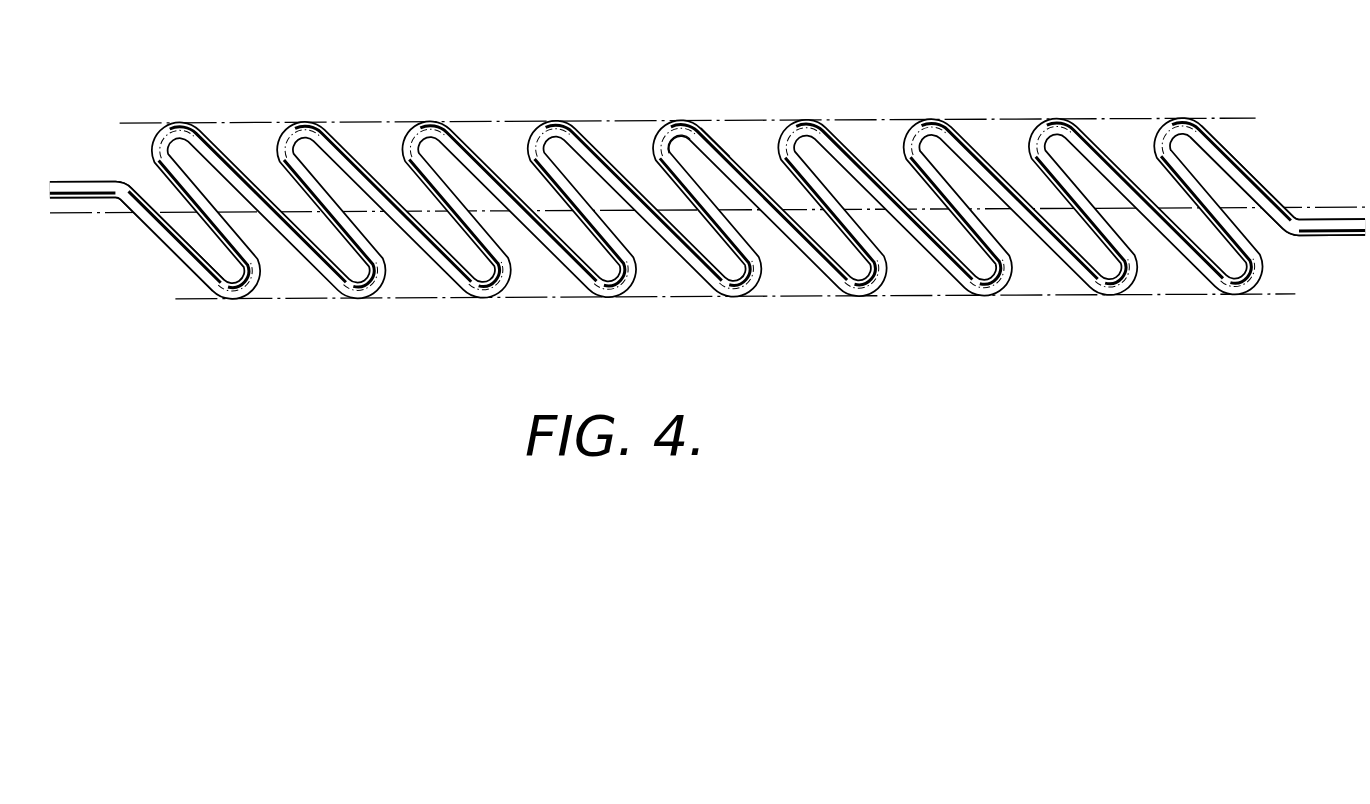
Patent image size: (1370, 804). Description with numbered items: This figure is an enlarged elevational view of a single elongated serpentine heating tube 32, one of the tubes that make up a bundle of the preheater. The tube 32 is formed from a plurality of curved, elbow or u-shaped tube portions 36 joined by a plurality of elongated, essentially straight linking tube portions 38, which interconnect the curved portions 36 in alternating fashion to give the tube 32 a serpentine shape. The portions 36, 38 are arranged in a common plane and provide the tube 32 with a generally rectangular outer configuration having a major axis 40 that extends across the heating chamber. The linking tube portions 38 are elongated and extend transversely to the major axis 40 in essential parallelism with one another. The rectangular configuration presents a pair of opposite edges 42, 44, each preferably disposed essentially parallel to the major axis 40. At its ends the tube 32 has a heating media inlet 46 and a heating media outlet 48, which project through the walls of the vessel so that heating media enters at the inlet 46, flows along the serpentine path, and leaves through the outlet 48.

The elongated serpentine heating tube 32 is at (1085, 129).
The curved tube portion 36 is at (673, 142).
The linking tube portion 38 is at (714, 142).
The major axis 40 is at (1311, 206).
The edge 42 is at (1236, 119).
The edge 44 is at (1163, 297).
The heating media inlet 46 is at (1331, 230).
The heating media outlet 48 is at (73, 182).